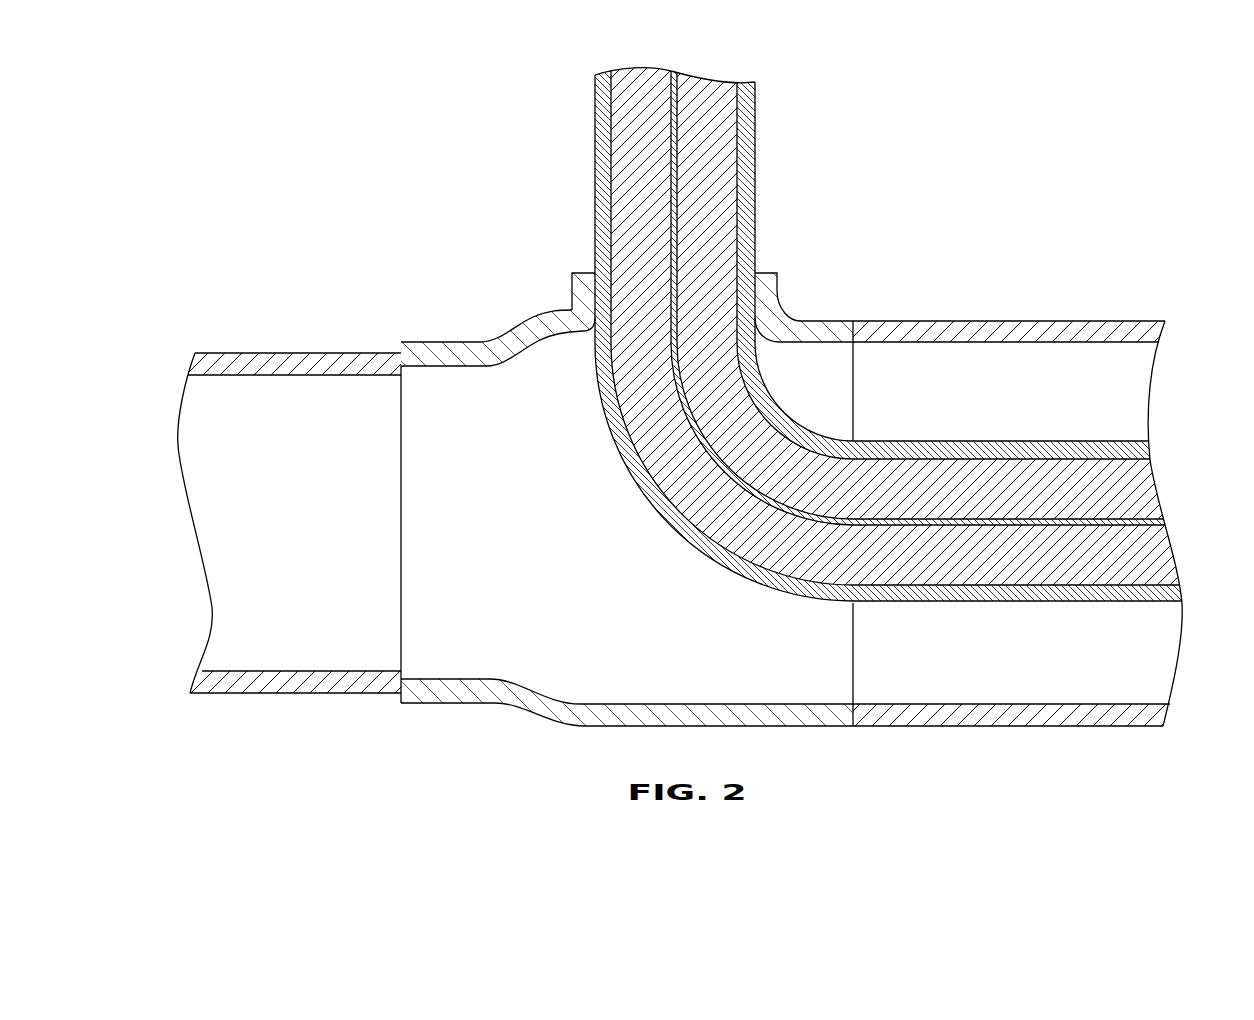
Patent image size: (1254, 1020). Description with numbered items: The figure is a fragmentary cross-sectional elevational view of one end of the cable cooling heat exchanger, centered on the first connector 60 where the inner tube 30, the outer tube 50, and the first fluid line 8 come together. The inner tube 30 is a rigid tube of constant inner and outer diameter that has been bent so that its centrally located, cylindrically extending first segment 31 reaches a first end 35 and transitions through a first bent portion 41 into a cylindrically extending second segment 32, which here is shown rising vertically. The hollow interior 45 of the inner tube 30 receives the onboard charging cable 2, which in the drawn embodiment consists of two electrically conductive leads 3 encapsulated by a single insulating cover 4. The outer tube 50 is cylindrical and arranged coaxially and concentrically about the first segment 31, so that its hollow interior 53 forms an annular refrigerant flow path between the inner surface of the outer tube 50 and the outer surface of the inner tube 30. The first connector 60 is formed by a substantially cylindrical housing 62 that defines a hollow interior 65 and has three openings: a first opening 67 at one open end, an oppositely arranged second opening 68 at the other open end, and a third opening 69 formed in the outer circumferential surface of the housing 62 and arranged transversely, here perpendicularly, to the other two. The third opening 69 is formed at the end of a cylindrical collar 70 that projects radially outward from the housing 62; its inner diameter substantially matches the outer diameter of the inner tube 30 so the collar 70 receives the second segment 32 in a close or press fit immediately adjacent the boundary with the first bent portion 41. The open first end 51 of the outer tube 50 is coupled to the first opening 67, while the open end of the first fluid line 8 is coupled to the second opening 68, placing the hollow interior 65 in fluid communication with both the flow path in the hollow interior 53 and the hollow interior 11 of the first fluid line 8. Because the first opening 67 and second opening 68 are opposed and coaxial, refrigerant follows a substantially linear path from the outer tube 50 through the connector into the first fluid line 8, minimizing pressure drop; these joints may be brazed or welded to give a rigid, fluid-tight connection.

The onboard charging cable 2 is at (1050, 594).
The leads 3 is at (1132, 485).
The insulating cover 4 is at (1160, 520).
The first fluid line 8 is at (286, 353).
The hollow interior of first fluid line 11 is at (263, 524).
The inner tube 30 is at (585, 111).
The first segment 31 is at (1060, 443).
The second segment 32 is at (594, 178).
The first end 35 is at (848, 440).
The first bent portion 41 is at (641, 491).
The hollow interior of inner tube 45 is at (1090, 594).
The outer tube 50 is at (1000, 323).
The first end of outer tube 51 is at (850, 700).
The hollow interior of outer tube 53 is at (948, 404).
The first connector 60 is at (506, 718).
The housing 62 is at (563, 720).
The hollow interior of first connector 65 is at (473, 526).
The first opening 67 is at (855, 700).
The second opening 68 is at (403, 680).
The third opening 69 is at (775, 273).
The collar 70 is at (780, 295).